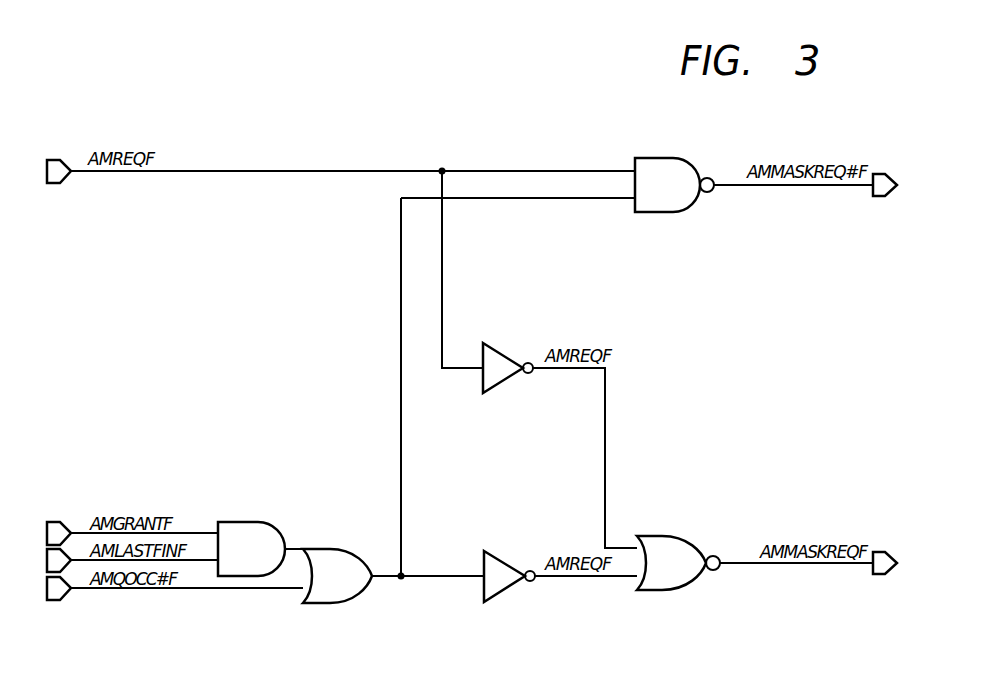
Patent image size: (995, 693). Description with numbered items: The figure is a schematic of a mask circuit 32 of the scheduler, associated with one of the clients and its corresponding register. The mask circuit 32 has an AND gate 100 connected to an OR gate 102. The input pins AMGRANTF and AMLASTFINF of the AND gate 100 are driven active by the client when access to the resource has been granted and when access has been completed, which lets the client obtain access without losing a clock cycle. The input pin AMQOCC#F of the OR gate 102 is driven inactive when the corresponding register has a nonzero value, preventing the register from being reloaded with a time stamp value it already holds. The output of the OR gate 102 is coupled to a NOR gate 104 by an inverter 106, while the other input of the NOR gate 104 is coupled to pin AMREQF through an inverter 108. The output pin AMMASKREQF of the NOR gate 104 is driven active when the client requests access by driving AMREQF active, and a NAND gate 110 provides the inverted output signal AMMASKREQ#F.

The mask circuit 32 is at (446, 110).
The AND gate 100 is at (250, 522).
The OR gate 102 is at (325, 604).
The NOR gate 104 is at (668, 536).
The inverter 106 is at (505, 596).
The inverter 108 is at (500, 353).
The NAND gate 110 is at (665, 158).